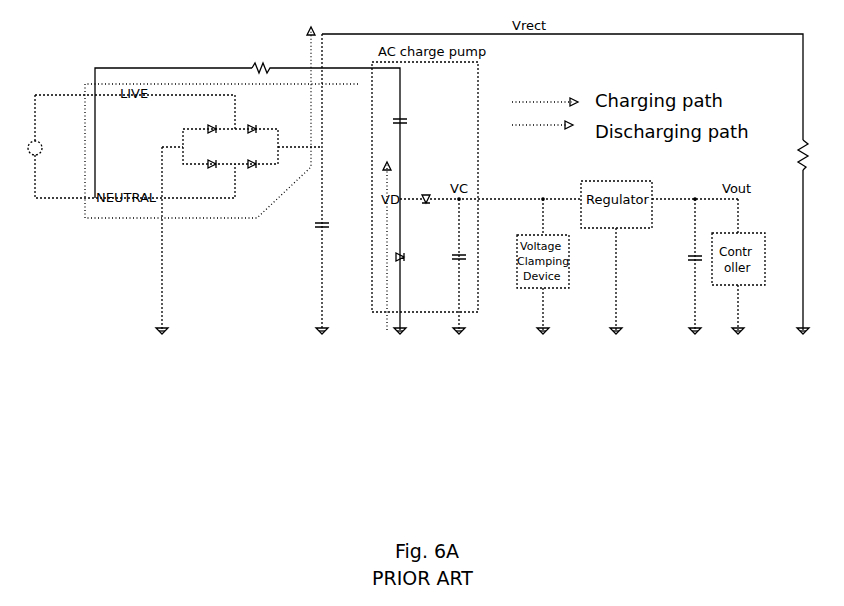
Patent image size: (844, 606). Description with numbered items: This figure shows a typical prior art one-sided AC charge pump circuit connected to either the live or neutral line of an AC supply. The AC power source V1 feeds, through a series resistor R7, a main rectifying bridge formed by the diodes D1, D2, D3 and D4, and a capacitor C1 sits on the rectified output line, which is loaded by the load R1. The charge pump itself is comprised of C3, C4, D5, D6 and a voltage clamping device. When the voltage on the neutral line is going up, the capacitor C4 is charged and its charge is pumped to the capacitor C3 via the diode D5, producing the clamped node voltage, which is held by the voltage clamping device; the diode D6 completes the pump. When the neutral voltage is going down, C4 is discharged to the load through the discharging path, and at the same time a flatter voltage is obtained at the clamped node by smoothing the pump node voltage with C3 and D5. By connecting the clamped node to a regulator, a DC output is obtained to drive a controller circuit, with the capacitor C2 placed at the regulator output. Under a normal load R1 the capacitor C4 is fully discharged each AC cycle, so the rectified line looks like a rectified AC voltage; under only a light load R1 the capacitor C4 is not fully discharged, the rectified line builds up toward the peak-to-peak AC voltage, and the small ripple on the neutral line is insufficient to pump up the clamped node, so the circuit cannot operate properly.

The AC power source V1 is at (54, 149).
The resistor R7 is at (263, 65).
The bridge diode D1 is at (230, 139).
The bridge diode D2 is at (252, 123).
The bridge diode D3 is at (212, 158).
The bridge diode D4 is at (252, 158).
The capacitor C1 is at (327, 218).
The charge pump capacitor C4 is at (394, 114).
The charge pump diode D5 is at (425, 190).
The charge pump diode D6 is at (392, 252).
The charge pump capacitor C3 is at (465, 251).
The output capacitor C2 is at (700, 251).
The load R1 is at (792, 155).